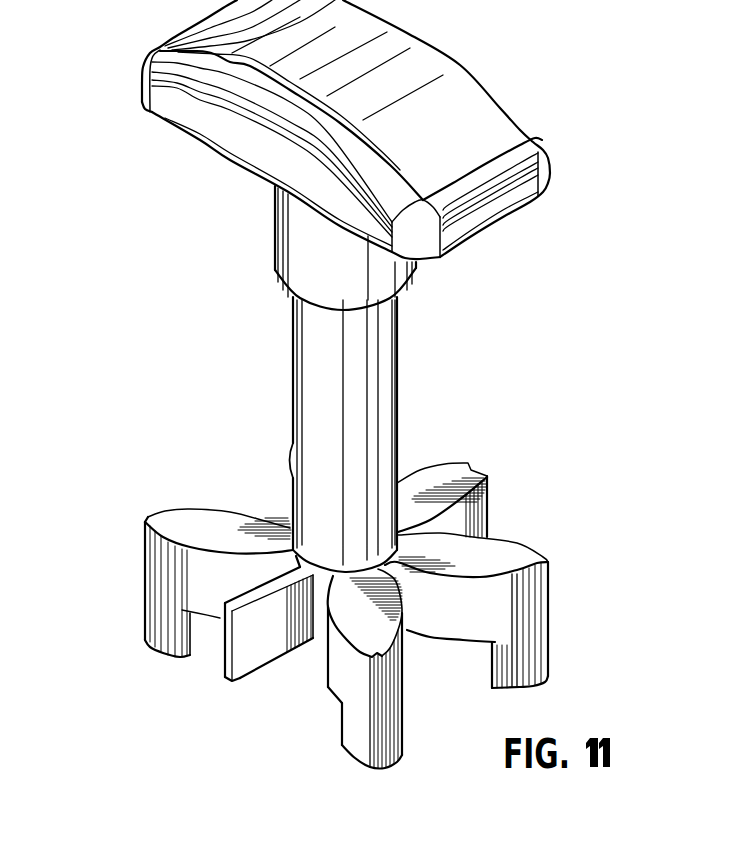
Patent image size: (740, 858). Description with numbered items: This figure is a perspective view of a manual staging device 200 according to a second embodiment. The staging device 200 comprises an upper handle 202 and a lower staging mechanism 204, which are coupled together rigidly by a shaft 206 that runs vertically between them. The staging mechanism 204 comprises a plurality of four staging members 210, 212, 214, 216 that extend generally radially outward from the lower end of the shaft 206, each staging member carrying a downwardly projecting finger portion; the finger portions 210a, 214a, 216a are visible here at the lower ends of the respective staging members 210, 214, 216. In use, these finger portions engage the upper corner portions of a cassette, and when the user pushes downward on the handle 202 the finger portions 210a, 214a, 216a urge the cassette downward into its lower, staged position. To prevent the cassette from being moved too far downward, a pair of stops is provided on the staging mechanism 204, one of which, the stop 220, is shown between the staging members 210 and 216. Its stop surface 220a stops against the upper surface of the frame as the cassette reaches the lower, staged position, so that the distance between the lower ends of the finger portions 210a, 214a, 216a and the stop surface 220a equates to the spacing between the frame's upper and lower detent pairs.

The manual staging device 200 is at (602, 180).
The upper handle 202 is at (460, 64).
The lower staging mechanism 204 is at (488, 473).
The shaft 206 is at (397, 363).
The staging member 210 is at (152, 592).
The finger portion 210a is at (167, 653).
The staging member 212 is at (290, 469).
The staging member 214 is at (533, 618).
The finger portion 214a is at (530, 688).
The staging member 216 is at (348, 712).
The finger portion 216a is at (360, 770).
The stop 220 is at (263, 633).
The stop surface 220a is at (240, 678).